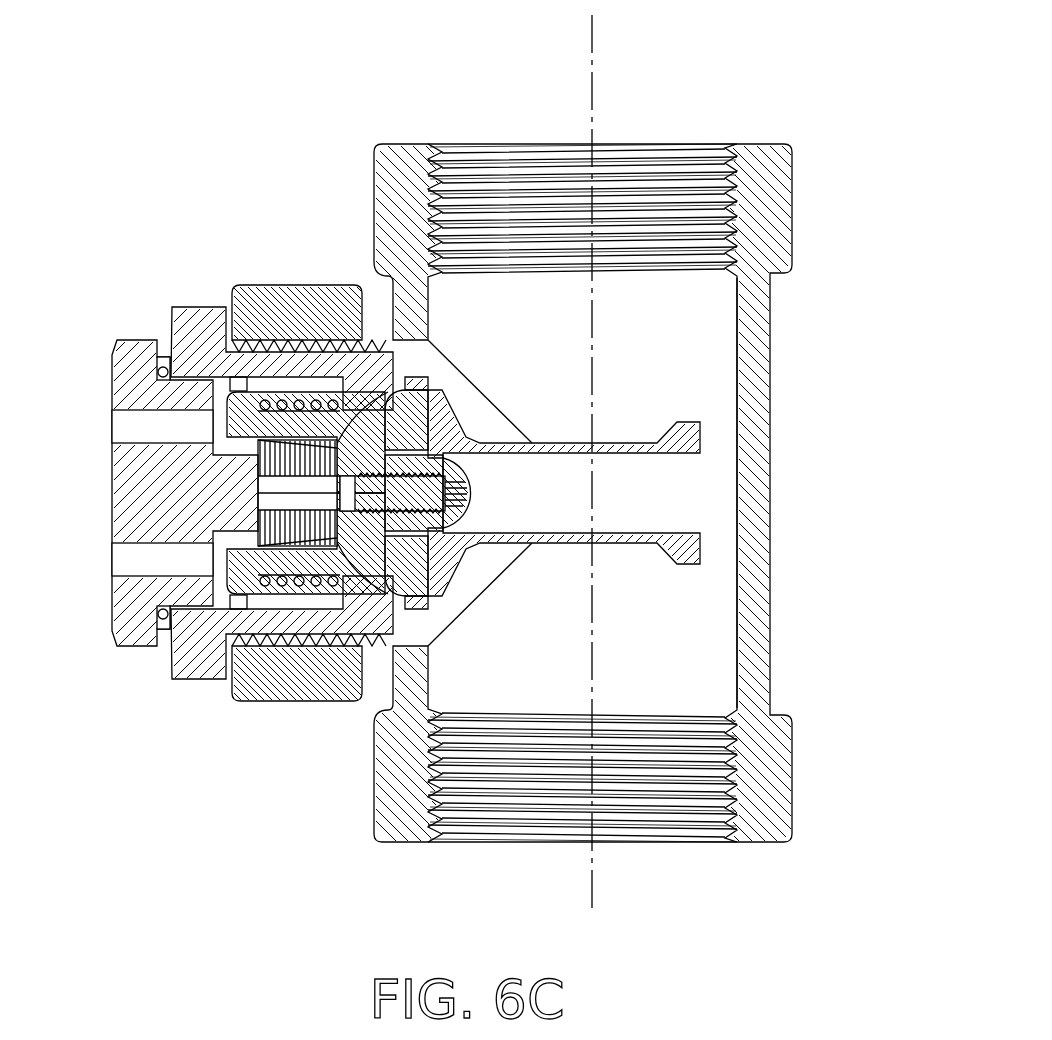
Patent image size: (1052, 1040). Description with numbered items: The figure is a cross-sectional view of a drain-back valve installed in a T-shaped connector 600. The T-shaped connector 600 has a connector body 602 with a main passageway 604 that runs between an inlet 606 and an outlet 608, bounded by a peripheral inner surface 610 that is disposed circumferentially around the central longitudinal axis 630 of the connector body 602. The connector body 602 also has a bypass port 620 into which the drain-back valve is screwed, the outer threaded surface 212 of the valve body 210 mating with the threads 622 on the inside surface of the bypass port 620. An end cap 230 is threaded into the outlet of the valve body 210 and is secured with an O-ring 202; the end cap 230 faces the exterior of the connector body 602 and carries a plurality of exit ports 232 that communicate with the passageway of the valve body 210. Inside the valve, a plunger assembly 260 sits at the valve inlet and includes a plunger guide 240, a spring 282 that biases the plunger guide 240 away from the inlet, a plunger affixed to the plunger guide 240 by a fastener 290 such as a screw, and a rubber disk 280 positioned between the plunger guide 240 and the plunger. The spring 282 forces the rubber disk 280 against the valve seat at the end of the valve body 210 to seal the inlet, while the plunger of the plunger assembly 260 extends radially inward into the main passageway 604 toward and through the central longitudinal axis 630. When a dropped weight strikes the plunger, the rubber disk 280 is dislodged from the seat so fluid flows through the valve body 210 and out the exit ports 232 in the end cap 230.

The T-shaped connector 600 is at (838, 309).
The connector body 602 is at (752, 536).
The main passageway 604 is at (632, 675).
The inlet 606 is at (615, 845).
The outlet 608 is at (657, 147).
The peripheral inner surface 610 is at (730, 600).
The central longitudinal axis 630 is at (589, 62).
The plunger assembly 260 is at (556, 444).
The fastener 290 is at (462, 518).
The rubber disk 280 is at (397, 420).
The spring 282 is at (313, 395).
The plunger guide 240 is at (357, 555).
The valve body 210 is at (192, 660).
The bypass port 620 is at (280, 305).
The threads 622 is at (308, 655).
The end cap 230 is at (125, 606).
The exit ports 232 is at (125, 427).
The O-ring 202 is at (160, 366).
The outer threaded surface 212 is at (235, 642).